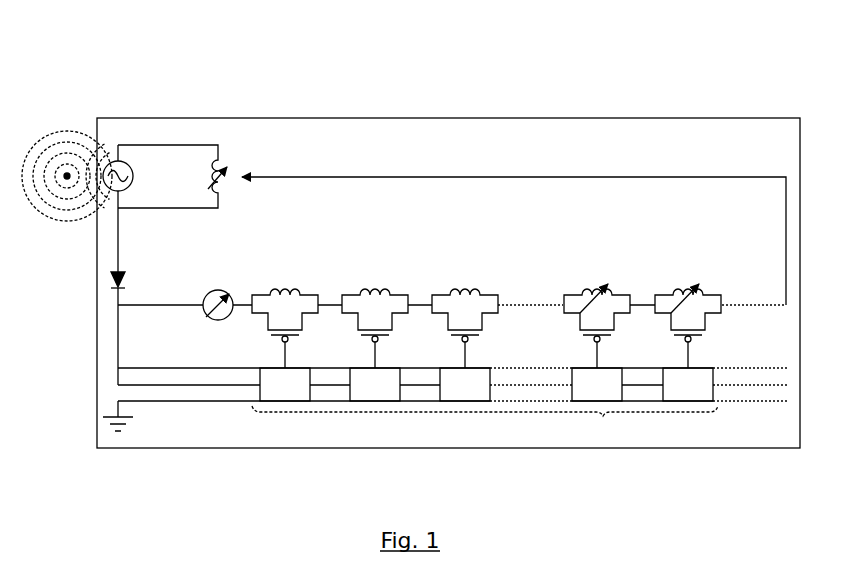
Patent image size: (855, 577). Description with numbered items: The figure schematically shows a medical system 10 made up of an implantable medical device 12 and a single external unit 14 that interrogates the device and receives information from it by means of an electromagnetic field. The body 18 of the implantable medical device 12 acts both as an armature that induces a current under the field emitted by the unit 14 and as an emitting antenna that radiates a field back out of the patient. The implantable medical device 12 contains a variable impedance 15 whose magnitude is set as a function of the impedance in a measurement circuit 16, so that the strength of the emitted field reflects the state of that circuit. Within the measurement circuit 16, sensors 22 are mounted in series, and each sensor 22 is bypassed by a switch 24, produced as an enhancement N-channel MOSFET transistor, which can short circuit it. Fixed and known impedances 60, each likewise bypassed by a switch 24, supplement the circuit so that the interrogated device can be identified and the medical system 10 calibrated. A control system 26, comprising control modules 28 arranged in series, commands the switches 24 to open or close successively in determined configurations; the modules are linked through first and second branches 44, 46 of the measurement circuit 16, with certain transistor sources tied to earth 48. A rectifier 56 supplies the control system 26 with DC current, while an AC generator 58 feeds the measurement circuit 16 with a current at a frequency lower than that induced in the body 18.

The medical system 10 is at (196, 78).
The implantable medical device 12 is at (265, 117).
The unit for interrogating the medical device 14 is at (67, 174).
The variable impedance 15 is at (212, 176).
The measurement circuit 16 is at (516, 236).
The body of the implantable medical device 18 is at (112, 160).
The sensor 22 is at (588, 296).
The switch / transistor 24 is at (281, 340).
The system for controlling the switches 26 is at (603, 416).
The control module 28 is at (274, 397).
The first branch of the measurement circuit 44 is at (145, 367).
The second branch of the measurement circuit 46 is at (177, 384).
The earth 48 is at (112, 412).
The rectifier 56 is at (112, 281).
The AC generator 58 is at (217, 291).
The fixed and known impedance 60 is at (284, 289).